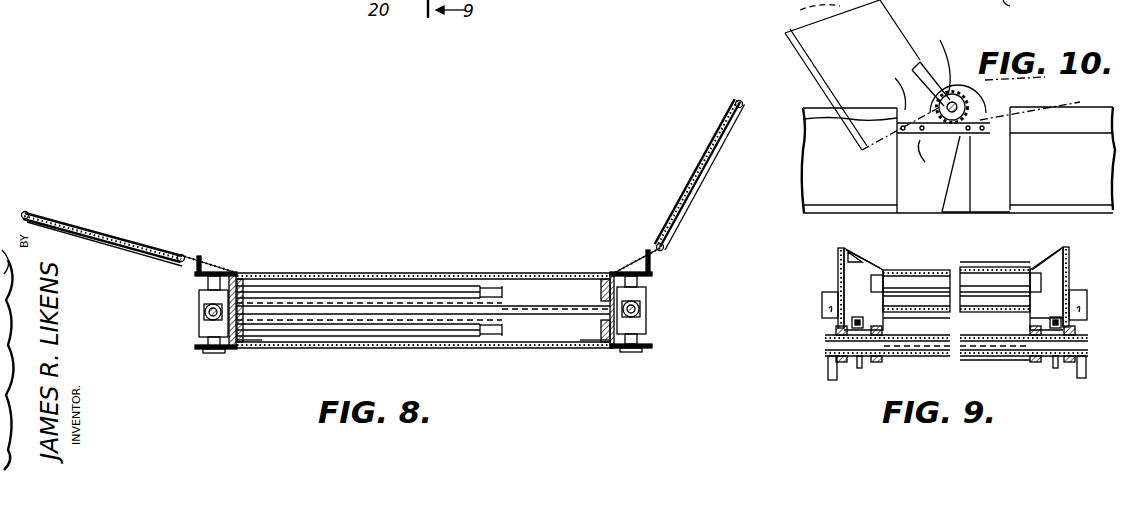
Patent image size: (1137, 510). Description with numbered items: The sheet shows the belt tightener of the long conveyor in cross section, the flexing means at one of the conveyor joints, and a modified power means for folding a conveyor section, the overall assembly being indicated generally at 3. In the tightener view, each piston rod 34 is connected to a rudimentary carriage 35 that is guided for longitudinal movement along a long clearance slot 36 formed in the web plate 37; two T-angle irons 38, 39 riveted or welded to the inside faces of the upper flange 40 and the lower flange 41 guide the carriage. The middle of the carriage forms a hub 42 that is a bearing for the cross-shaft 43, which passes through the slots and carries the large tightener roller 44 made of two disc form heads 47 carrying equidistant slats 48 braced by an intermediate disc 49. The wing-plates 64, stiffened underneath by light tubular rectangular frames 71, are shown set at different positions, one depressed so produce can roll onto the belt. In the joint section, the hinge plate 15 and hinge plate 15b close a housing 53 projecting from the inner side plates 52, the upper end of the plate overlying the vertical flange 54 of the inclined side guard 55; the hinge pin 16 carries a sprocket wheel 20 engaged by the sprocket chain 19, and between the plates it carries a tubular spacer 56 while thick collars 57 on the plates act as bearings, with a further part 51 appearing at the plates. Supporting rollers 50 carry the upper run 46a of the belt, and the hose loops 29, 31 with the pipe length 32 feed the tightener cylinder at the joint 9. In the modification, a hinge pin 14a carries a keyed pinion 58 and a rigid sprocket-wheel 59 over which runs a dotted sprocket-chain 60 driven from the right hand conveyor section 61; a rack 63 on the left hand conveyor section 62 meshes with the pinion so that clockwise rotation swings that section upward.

In FIG. 8, the container assembly 3 is at (478, 252).
In FIG. 9, the container assembly 3 is at (978, 255).
In FIG. 9, the joint 9 is at (824, 344).
In FIG. 10, the hinge pin 14a is at (944, 50).
In FIG. 9, the block 15 is at (822, 300).
In FIG. 9, the hinge plate 15b is at (838, 268).
In FIG. 9, the hinge pin 16 is at (945, 350).
In FIG. 9, the sprocket chain 19 is at (863, 314).
In FIG. 9, the sprocket wheel 20 is at (860, 368).
In FIG. 10, the loop of flexible hose 29 is at (1017, 9).
In FIG. 9, the hose loop 31 is at (828, 370).
In FIG. 9, the pipe length 32 is at (828, 314).
In FIG. 8, the piston rod 34 is at (204, 312).
In FIG. 8, the carriage 35 is at (204, 326).
In FIG. 8, the clearance slot 36 is at (248, 342).
In FIG. 8, the web plate 37 is at (242, 286).
In FIG. 8, the T-angle iron 38 is at (215, 272).
In FIG. 8, the T-angle iron 39 is at (212, 350).
In FIG. 8, the upper flange 40 is at (197, 278).
In FIG. 8, the lower flange 41 is at (200, 350).
In FIG. 8, the hub 42 is at (199, 300).
In FIG. 8, the cross-shaft 43 is at (535, 306).
In FIG. 8, the tightener roller 44 is at (373, 286).
In FIG. 9, the upper run of the belt 46a is at (972, 268).
In FIG. 8, the disc form heads 47 is at (246, 293).
In FIG. 8, the slats 48 is at (496, 288).
In FIG. 8, the intermediate disc 49 is at (430, 290).
In FIG. 9, the supporting rollers 50 is at (903, 283).
In FIG. 9, the block 51 is at (871, 286).
In FIG. 9, the inner side plates 52 is at (885, 317).
In FIG. 9, the housing 53 is at (838, 276).
In FIG. 9, the vertical flange 54 is at (862, 266).
In FIG. 8, the inclined side guard 55 is at (200, 257).
In FIG. 9, the inclined side guard 55 is at (848, 258).
In FIG. 9, the tubular spacer 56 is at (972, 354).
In FIG. 9, the collars 57 is at (876, 362).
In FIG. 10, the pinion 58 is at (966, 97).
In FIG. 10, the sprocket-wheel 59 is at (912, 68).
In FIG. 10, the sprocket-chain 60 is at (1040, 78).
In FIG. 10, the right hand conveyor section 61 is at (1047, 156).
In FIG. 10, the left hand conveyor section 62 is at (790, 42).
In FIG. 10, the rack 63 is at (895, 80).
In FIG. 8, the wing-plates 64 is at (82, 218).
In FIG. 8, the rectangular frames 71 is at (172, 260).